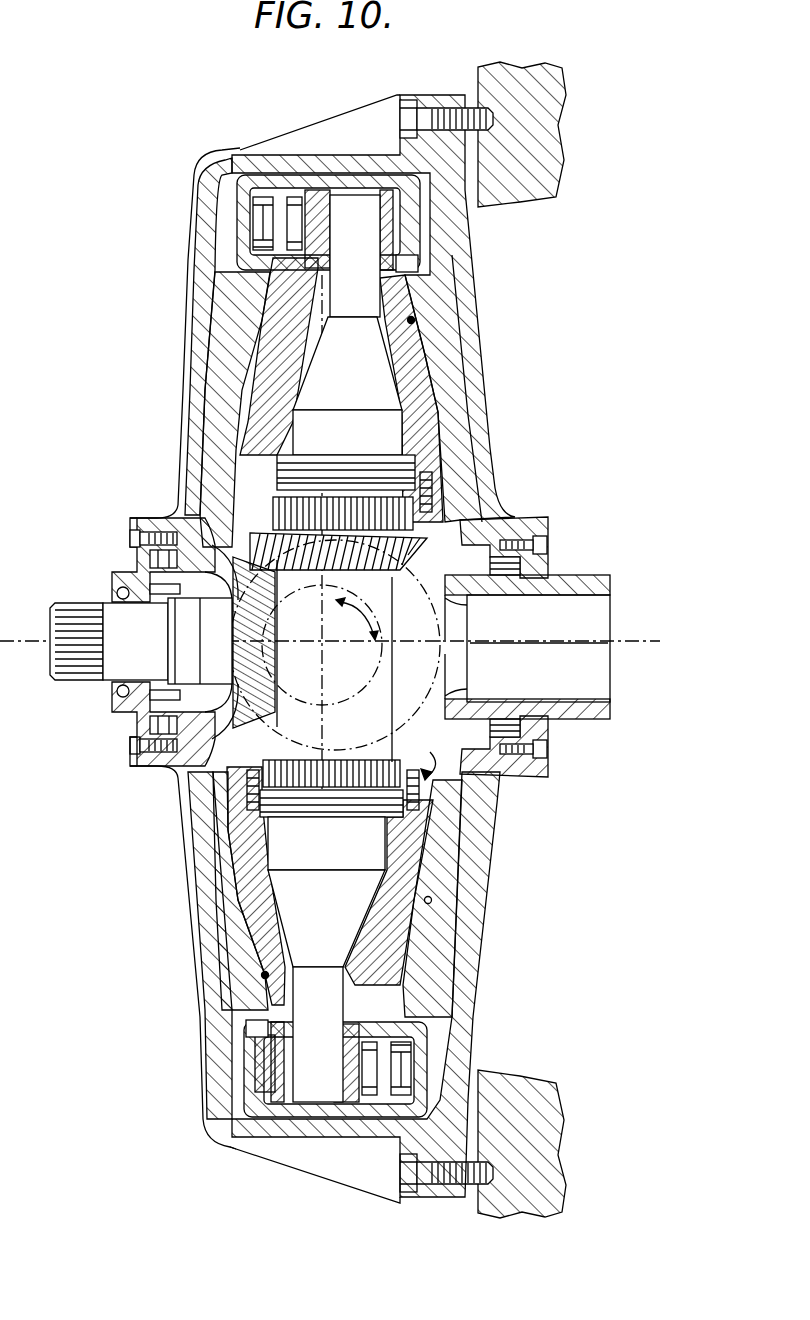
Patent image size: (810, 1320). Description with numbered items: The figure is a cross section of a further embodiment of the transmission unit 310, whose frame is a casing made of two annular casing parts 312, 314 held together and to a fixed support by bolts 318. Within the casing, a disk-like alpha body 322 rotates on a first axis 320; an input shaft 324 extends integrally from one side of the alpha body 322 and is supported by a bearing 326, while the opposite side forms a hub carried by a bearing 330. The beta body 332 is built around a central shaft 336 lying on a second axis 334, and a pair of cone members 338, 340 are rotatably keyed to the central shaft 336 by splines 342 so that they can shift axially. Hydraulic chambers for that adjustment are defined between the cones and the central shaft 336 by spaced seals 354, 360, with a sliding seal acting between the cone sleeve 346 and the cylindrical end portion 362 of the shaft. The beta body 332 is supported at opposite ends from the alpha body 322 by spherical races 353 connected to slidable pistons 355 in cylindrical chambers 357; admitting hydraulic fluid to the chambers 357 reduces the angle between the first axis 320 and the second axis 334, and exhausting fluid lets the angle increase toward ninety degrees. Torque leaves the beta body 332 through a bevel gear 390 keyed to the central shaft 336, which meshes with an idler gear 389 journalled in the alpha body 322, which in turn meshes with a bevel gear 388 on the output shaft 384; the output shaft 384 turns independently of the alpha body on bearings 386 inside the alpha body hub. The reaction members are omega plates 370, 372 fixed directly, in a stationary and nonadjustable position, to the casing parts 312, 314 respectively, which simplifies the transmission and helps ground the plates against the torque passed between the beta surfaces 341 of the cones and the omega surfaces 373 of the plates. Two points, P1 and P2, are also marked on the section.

The transmission unit 310 is at (166, 372).
The casing part 312 is at (327, 122).
The casing part 314 is at (455, 240).
The bolts 318 is at (453, 110).
The first axis 320 is at (642, 641).
The alpha body 322 is at (240, 313).
The input shaft 324 is at (600, 578).
The bearing 326 is at (515, 572).
The bearing 330 is at (130, 553).
The beta body 332 is at (420, 754).
The second axis 334 is at (318, 930).
The central shaft 336 is at (374, 687).
The cone member 338 is at (410, 347).
The cone member 340 is at (385, 855).
The beta surfaces 341 is at (400, 367).
The splines 342 is at (373, 503).
The sleeve 346 is at (323, 250).
The spherical races 353 is at (398, 236).
The seal 354 is at (308, 480).
The slidable pistons 355 is at (296, 200).
The cylindrical chambers 357 is at (263, 197).
The seal 360 is at (323, 280).
The cylindrical end portion 362 is at (373, 274).
The omega plate 370 is at (205, 425).
The omega plate 372 is at (453, 363).
The omega surfaces 373 is at (432, 897).
The output shaft 384 is at (154, 637).
The bearings 386 is at (127, 590).
The bevel gear 388 is at (278, 645).
The idler gear 389 is at (432, 660).
The bevel gear 390 is at (327, 573).
The pivot point P1 is at (411, 320).
The pivot point P2 is at (265, 975).